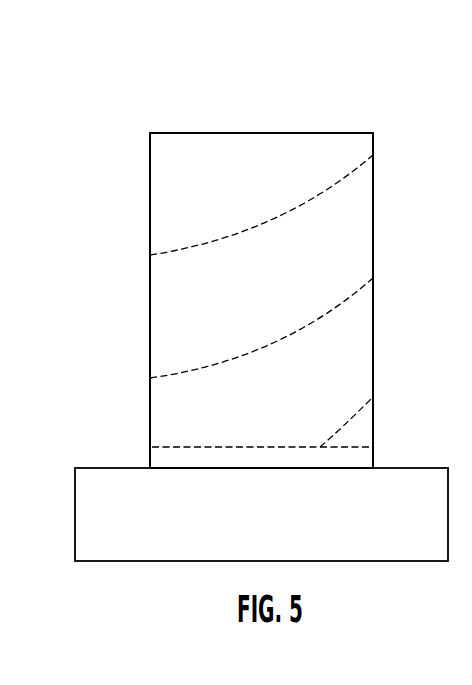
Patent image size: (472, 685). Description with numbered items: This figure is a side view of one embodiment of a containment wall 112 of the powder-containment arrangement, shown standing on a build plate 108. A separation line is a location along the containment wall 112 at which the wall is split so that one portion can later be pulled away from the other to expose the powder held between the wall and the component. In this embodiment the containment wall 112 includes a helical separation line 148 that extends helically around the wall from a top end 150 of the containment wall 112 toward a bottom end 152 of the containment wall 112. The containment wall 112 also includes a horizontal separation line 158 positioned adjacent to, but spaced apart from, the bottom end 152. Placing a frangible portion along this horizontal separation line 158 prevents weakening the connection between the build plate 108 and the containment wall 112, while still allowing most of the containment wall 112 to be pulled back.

The build plate 108 is at (83, 467).
The containment wall 112 is at (96, 129).
The helical separation line 148 is at (241, 236).
The top end 150 is at (267, 132).
The bottom end 152 is at (398, 443).
The horizontal separation line 158 is at (227, 446).